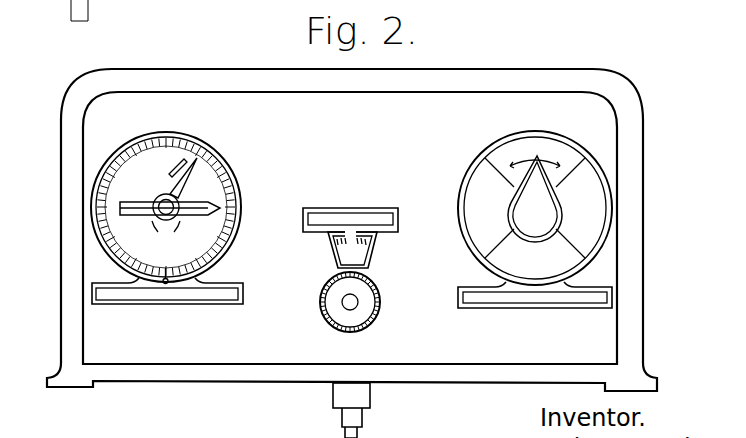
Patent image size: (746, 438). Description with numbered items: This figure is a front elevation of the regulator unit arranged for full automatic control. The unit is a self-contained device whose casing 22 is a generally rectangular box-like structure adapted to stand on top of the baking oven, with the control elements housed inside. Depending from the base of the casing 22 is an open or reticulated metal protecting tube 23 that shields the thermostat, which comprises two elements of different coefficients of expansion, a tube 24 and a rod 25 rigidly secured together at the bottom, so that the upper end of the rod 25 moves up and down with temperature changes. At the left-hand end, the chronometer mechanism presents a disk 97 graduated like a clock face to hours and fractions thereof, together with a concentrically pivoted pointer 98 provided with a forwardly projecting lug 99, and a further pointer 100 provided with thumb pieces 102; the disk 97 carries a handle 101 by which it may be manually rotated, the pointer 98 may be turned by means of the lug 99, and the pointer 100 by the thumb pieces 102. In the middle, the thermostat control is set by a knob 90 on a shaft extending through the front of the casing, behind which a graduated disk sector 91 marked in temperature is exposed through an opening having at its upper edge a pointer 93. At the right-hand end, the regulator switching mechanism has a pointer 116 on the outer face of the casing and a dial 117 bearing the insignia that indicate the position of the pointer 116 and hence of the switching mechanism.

The casing 22 is at (499, 103).
The protecting tube 23 is at (336, 394).
The tube 24 is at (344, 412).
The rod 25 is at (346, 430).
The knob 90 is at (381, 306).
The graduated disk sector 91 is at (361, 249).
The pointer 93 is at (350, 240).
The disk 97 is at (178, 151).
The pointer 98 is at (192, 167).
The lug 99 is at (176, 171).
The pointer 100 is at (215, 213).
The handle 101 is at (164, 284).
The thumb pieces 102 is at (166, 221).
The pointer 116 is at (540, 165).
The dial 117 is at (471, 173).